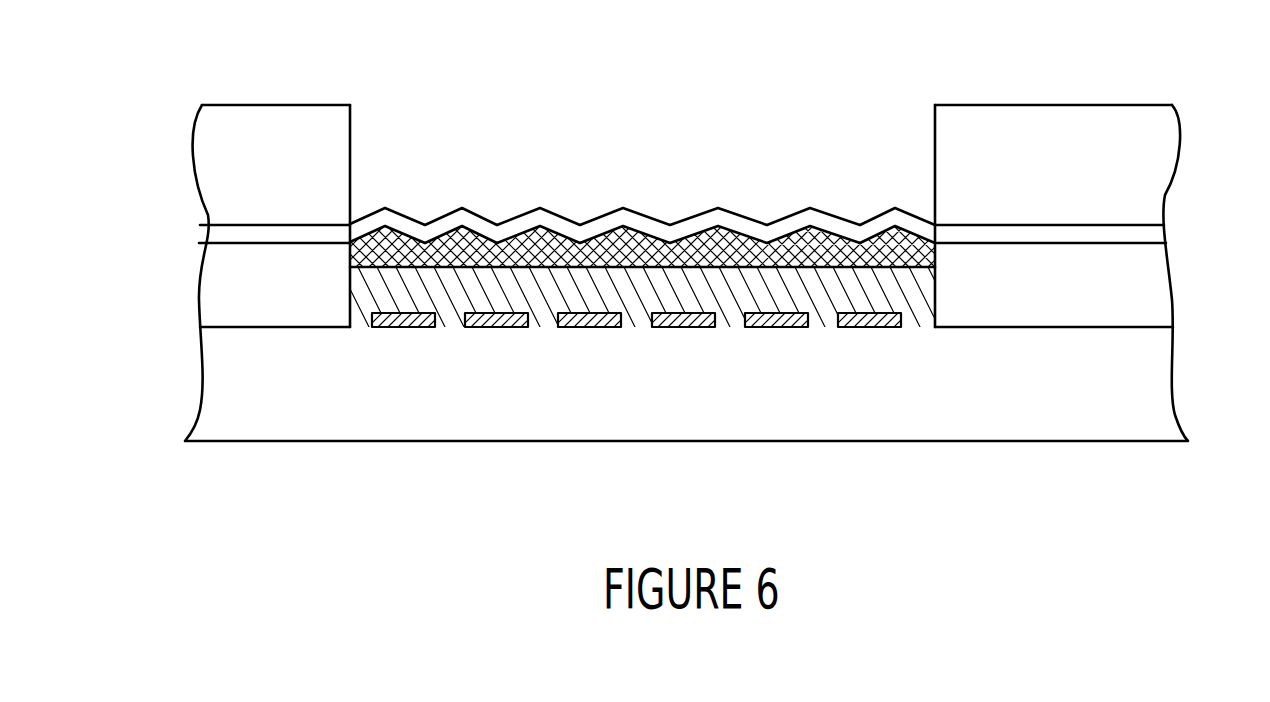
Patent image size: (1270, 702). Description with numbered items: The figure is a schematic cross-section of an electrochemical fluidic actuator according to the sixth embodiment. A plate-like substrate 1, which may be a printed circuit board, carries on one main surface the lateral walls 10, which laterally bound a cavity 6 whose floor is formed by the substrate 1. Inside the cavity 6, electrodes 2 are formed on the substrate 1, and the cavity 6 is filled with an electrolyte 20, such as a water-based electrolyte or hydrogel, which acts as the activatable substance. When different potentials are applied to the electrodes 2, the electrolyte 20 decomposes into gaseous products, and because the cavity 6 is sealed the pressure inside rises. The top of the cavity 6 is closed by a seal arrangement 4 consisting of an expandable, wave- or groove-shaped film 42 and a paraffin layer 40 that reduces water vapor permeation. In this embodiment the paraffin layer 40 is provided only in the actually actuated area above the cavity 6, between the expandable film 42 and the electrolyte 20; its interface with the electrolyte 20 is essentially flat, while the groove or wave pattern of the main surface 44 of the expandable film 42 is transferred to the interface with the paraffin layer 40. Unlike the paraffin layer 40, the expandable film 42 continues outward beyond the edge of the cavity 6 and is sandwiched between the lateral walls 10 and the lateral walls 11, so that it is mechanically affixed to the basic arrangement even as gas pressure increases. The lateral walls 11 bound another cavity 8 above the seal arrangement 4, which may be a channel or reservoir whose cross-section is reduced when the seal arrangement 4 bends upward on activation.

The substrate 1 is at (295, 393).
The electrodes 2 is at (400, 327).
The seal arrangement 4 is at (639, 150).
The cavity 6 is at (933, 282).
The other cavity 8 is at (352, 153).
The lateral walls 10 is at (250, 283).
The lateral walls 11 is at (250, 172).
The electrolyte 20 is at (549, 270).
The paraffin layer 40 is at (642, 159).
The expandable film 42 is at (873, 233).
The main surface 44 is at (648, 237).